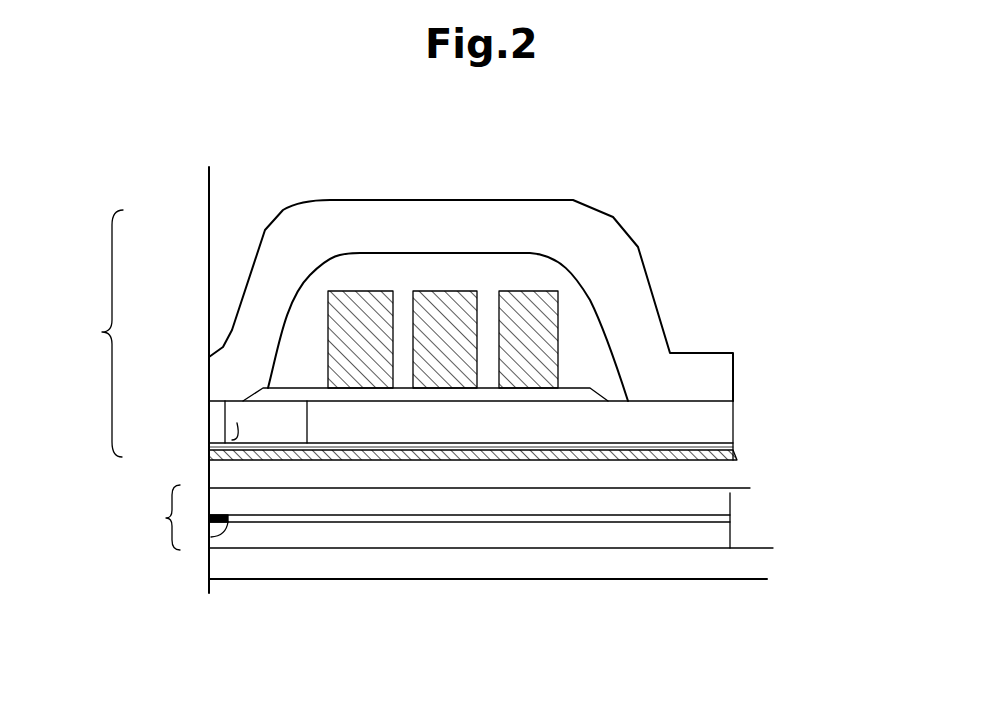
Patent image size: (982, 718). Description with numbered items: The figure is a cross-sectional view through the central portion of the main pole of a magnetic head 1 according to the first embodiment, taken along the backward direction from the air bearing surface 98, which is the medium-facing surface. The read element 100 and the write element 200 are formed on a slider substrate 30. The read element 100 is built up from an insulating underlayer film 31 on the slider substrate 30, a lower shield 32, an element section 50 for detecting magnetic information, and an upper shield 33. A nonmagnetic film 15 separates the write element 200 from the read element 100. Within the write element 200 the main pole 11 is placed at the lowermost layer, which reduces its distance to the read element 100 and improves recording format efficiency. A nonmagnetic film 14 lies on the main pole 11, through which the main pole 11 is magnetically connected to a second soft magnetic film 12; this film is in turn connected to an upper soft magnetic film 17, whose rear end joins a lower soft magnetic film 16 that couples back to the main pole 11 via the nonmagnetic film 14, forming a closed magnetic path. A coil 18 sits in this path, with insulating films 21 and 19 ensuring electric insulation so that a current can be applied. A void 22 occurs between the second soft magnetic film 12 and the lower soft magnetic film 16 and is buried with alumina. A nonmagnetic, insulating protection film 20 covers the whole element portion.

The semiconductor device 1 is at (578, 177).
The air bearing surface 98 is at (198, 163).
The protection film 20 is at (209, 200).
The write element 200 is at (88, 333).
The read element 100 is at (151, 517).
The upper soft magnetic film 17 is at (633, 320).
The insulating film 19 is at (545, 272).
The coil 18 is at (560, 297).
The insulating film 21 is at (588, 398).
The lower soft magnetic film 16 is at (673, 425).
The second soft magnetic film 12 is at (209, 420).
The void 22 is at (209, 446).
The nonmagnetic film 14 is at (703, 448).
The nonmagnetic film 15 is at (209, 477).
The main pole 11 is at (733, 460).
The upper shield 33 is at (712, 503).
The lower shield 32 is at (690, 543).
The insulating film 31 is at (548, 568).
The slider substrate 30 is at (297, 618).
The element section 50 is at (209, 530).